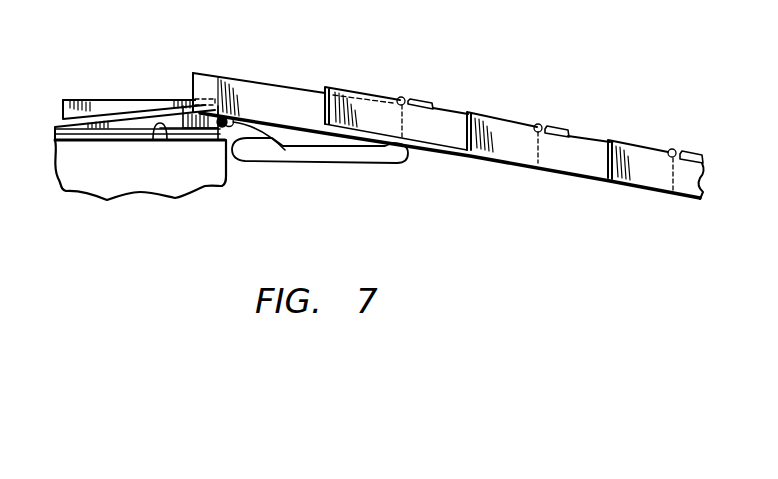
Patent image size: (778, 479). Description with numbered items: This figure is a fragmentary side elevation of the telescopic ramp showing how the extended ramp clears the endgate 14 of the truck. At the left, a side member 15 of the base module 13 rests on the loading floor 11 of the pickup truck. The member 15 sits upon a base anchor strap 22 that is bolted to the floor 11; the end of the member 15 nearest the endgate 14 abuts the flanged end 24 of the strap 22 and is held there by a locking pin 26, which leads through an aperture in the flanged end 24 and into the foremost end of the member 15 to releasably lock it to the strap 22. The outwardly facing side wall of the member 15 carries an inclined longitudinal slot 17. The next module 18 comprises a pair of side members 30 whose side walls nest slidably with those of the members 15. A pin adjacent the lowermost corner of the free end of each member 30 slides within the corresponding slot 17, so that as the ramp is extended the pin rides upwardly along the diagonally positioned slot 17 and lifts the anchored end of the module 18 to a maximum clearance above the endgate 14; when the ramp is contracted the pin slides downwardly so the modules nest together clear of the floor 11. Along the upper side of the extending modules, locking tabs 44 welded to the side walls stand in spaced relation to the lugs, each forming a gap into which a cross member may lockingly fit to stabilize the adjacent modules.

The loading floor 11 is at (103, 141).
The base module 13 is at (126, 99).
The endgate 14 is at (392, 152).
The side member 15 is at (112, 108).
The inclined longitudinal slot 17 is at (167, 112).
The module 18 is at (231, 69).
The strap 22 is at (167, 140).
The flanged end 24 is at (225, 131).
The locking pin 26 is at (287, 152).
The side member 30 is at (303, 100).
The locking tab 44 is at (418, 100).